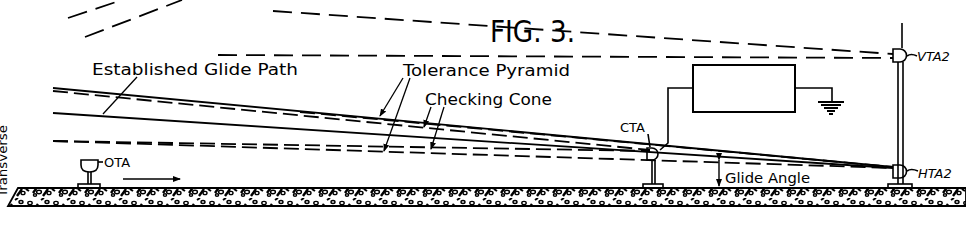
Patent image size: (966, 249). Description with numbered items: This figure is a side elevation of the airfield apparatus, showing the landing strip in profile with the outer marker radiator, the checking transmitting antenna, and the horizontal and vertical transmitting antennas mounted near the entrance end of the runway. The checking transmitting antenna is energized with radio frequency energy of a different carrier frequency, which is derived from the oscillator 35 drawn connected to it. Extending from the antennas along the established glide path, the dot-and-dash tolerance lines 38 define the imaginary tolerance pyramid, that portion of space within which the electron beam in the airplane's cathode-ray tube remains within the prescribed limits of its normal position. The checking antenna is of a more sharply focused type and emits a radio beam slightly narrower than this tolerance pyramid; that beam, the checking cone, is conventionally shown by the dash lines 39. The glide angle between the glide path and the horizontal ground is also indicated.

The oscillator 35 is at (759, 64).
The tolerance lines 38 is at (533, 127).
The dash lines 39 is at (163, 101).